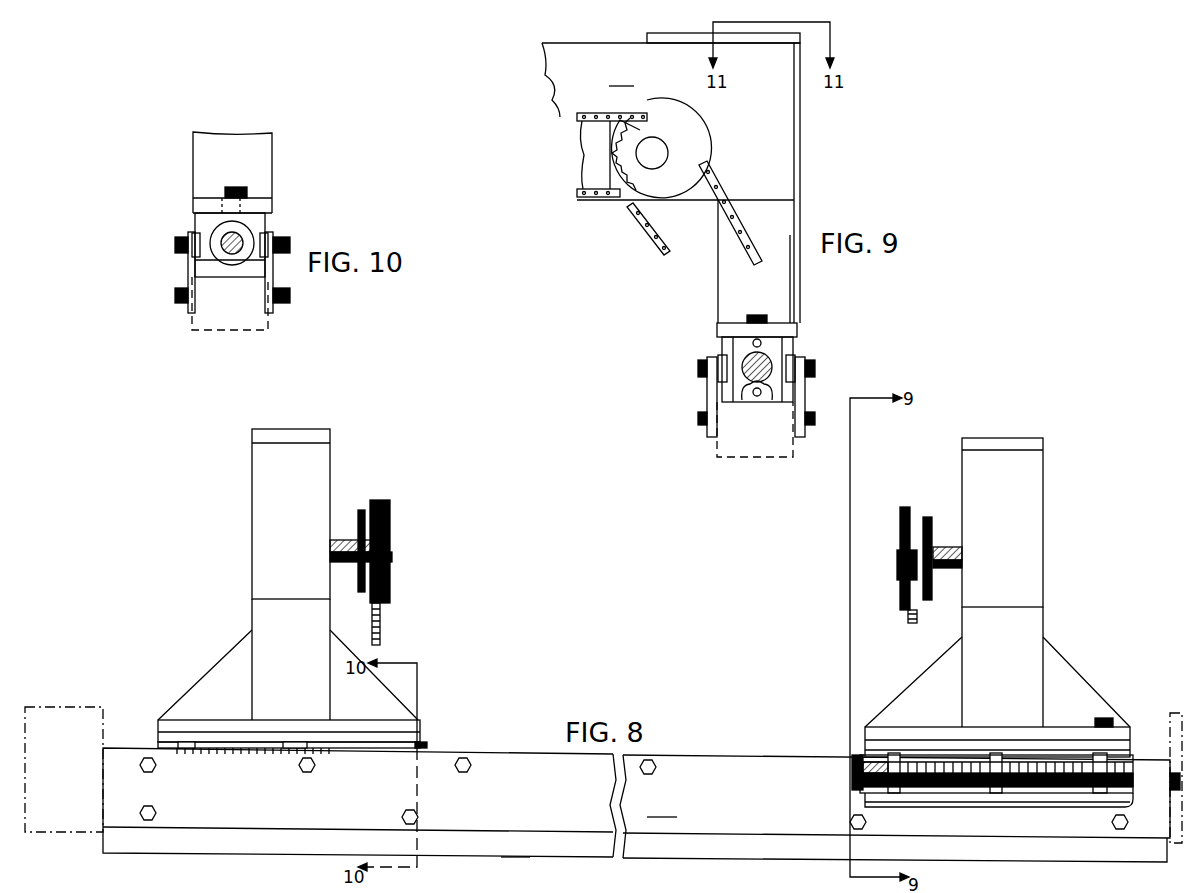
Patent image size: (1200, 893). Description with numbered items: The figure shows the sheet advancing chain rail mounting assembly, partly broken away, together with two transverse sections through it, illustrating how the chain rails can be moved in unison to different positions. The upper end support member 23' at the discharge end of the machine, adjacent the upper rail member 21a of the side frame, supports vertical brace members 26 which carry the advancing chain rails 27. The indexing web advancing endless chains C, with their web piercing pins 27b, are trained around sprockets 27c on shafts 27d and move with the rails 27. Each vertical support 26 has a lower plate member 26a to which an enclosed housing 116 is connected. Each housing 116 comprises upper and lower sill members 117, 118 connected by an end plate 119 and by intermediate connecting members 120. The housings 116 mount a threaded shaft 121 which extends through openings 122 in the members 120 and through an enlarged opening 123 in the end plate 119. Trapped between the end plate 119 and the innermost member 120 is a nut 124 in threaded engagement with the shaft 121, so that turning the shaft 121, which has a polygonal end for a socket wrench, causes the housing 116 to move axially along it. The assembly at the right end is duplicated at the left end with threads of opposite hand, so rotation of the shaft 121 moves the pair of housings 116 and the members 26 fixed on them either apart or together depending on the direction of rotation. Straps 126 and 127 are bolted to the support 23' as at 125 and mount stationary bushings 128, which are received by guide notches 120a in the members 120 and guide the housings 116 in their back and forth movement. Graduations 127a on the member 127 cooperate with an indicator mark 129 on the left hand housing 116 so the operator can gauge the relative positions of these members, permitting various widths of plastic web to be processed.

In FIG. 8, the upper rail member 21a is at (103, 707).
In FIG. 10, the upper end support member 23' is at (301, 350).
In FIG. 9, the upper end support member 23' is at (716, 472).
In FIG. 8, the upper end support member 23' is at (636, 805).
In FIG. 10, the vertical brace member 26 is at (272, 148).
In FIG. 9, the vertical brace member 26 is at (718, 236).
In FIG. 8, the vertical brace member 26 is at (252, 600).
In FIG. 10, the lower plate member 26a is at (265, 218).
In FIG. 9, the lower plate member 26a is at (735, 340).
In FIG. 8, the lower plate member 26a is at (420, 724).
In FIG. 9, the advancing chain rail 27 is at (671, 178).
In FIG. 8, the advancing chain rail 27 is at (252, 470).
In FIG. 9, the web piercing pin 27b is at (577, 116).
In FIG. 8, the web piercing pin 27b is at (925, 603).
In FIG. 8, the sprocket 27c is at (358, 578).
In FIG. 8, the shaft 27d is at (337, 540).
In FIG. 9, the indexing web advancing endless chain C is at (592, 116).
In FIG. 8, the indexing web advancing endless chain C is at (362, 508).
In FIG. 10, the enclosed housing 116 is at (183, 190).
In FIG. 9, the enclosed housing 116 is at (708, 335).
In FIG. 8, the enclosed housing 116 is at (1147, 733).
In FIG. 10, the upper sill member 117 is at (193, 215).
In FIG. 9, the upper sill member 117 is at (795, 355).
In FIG. 8, the upper sill member 117 is at (158, 738).
In FIG. 10, the lower sill member 118 is at (188, 308).
In FIG. 9, the lower sill member 118 is at (797, 392).
In FIG. 8, the lower sill member 118 is at (1070, 800).
In FIG. 9, the end plate 119 is at (722, 328).
In FIG. 8, the end plate 119 is at (427, 748).
In FIG. 10, the intermediate connecting member 120 is at (273, 272).
In FIG. 9, the intermediate connecting member 120 is at (712, 398).
In FIG. 8, the intermediate connecting member 120 is at (290, 742).
In FIG. 10, the guide notch 120a is at (268, 237).
In FIG. 9, the guide notch 120a is at (707, 365).
In FIG. 8, the guide notch 120a is at (905, 796).
In FIG. 10, the threaded shaft 121 is at (240, 228).
In FIG. 9, the threaded shaft 121 is at (745, 406).
In FIG. 8, the threaded shaft 121 is at (1037, 755).
In FIG. 10, the opening 122 is at (237, 287).
In FIG. 8, the opening 122 is at (990, 760).
In FIG. 9, the enlarged opening 123 is at (752, 404).
In FIG. 10, the nut 124 is at (232, 256).
In FIG. 8, the nut 124 is at (1075, 800).
In FIG. 10, the bolt 125 is at (290, 302).
In FIG. 9, the bolt 125 is at (700, 422).
In FIG. 8, the bolt 125 is at (455, 770).
In FIG. 10, the strap 126 is at (285, 292).
In FIG. 9, the strap 126 is at (700, 362).
In FIG. 10, the strap 127 is at (188, 313).
In FIG. 9, the strap 127 is at (805, 438).
In FIG. 8, the strap 127 is at (663, 807).
In FIG. 8, the graduations 127a is at (255, 755).
In FIG. 10, the stationary bushing 128 is at (192, 238).
In FIG. 9, the stationary bushing 128 is at (797, 365).
In FIG. 8, the indicator mark 129 is at (300, 752).